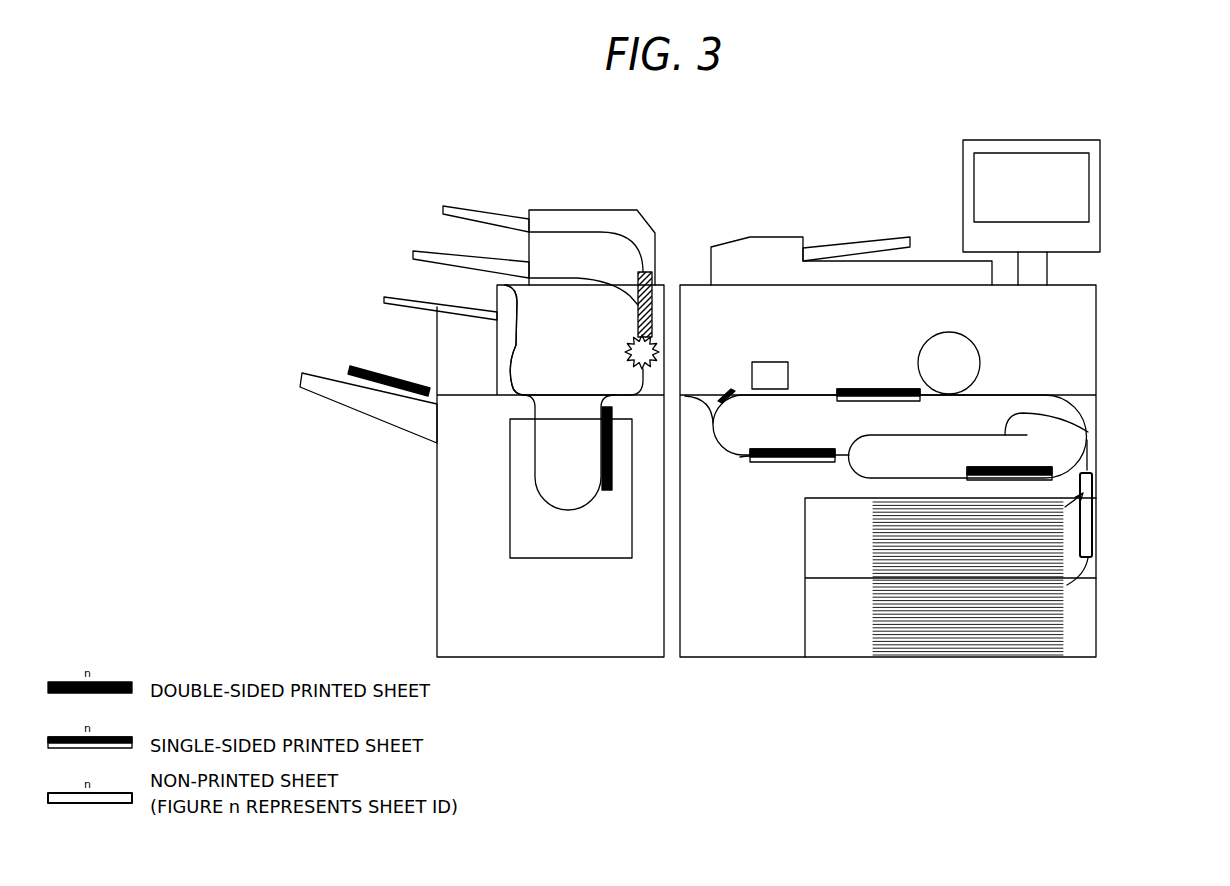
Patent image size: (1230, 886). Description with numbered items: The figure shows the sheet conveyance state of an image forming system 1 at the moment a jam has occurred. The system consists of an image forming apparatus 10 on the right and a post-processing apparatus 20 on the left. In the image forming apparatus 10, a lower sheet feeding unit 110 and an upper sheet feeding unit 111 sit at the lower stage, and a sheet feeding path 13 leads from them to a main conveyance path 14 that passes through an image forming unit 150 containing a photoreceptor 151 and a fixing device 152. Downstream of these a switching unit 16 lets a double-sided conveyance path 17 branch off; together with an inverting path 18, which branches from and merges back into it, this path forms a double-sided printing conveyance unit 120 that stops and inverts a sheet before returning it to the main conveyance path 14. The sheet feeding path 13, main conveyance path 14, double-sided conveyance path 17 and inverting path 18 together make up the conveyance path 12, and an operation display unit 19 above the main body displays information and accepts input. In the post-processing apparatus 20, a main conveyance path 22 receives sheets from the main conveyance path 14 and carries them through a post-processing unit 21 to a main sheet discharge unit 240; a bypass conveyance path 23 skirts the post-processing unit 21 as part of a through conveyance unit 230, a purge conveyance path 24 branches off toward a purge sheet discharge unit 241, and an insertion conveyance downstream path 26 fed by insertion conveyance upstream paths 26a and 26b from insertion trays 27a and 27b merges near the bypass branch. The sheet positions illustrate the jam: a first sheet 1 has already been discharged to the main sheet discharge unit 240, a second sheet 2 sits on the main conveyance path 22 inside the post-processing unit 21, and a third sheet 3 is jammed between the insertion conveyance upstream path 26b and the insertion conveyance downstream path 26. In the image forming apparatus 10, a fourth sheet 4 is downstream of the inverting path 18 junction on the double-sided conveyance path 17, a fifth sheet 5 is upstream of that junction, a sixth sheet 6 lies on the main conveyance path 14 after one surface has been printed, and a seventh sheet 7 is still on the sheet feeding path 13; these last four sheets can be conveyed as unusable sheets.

The image forming system 1 is at (752, 775).
The second sheet 2 is at (613, 448).
The third sheet 3 is at (627, 320).
The fourth sheet 4 is at (1009, 465).
The fifth sheet 5 is at (792, 465).
The sixth sheet 6 is at (878, 386).
The seventh sheet 7 is at (1091, 515).
The image forming apparatus 10 is at (1075, 657).
The conveyance path 12 is at (1098, 393).
The sheet feeding path 13 is at (1090, 463).
The main conveyance path 14 is at (1083, 387).
The switching unit 16 is at (725, 392).
The double-sided conveyance path 17 is at (740, 457).
The inverting path 18 is at (1088, 432).
The operation display unit 19 is at (1033, 140).
The post-processing apparatus 20 is at (465, 657).
The post-processing unit 21 is at (502, 548).
The main conveyance path 22 is at (535, 470).
The bypass conveyance path 23 is at (572, 394).
The purge conveyance path 24 is at (516, 336).
The insertion conveyance downstream path 26 is at (668, 285).
The insertion conveyance upstream path 26a is at (563, 277).
The insertion conveyance upstream path 26b is at (605, 232).
The insertion tray 27a is at (433, 251).
The insertion tray 27b is at (468, 207).
The lower sheet feeding unit 110 is at (843, 629).
The upper sheet feeding unit 111 is at (1105, 549).
The double-sided printing conveyance unit 120 is at (706, 486).
The image forming unit 150 is at (1027, 340).
The photoreceptor 151 is at (949, 332).
The fixing device 152 is at (770, 362).
The through conveyance unit 230 is at (540, 360).
The main sheet discharge unit 240 is at (315, 372).
The purge sheet discharge unit 241 is at (393, 297).